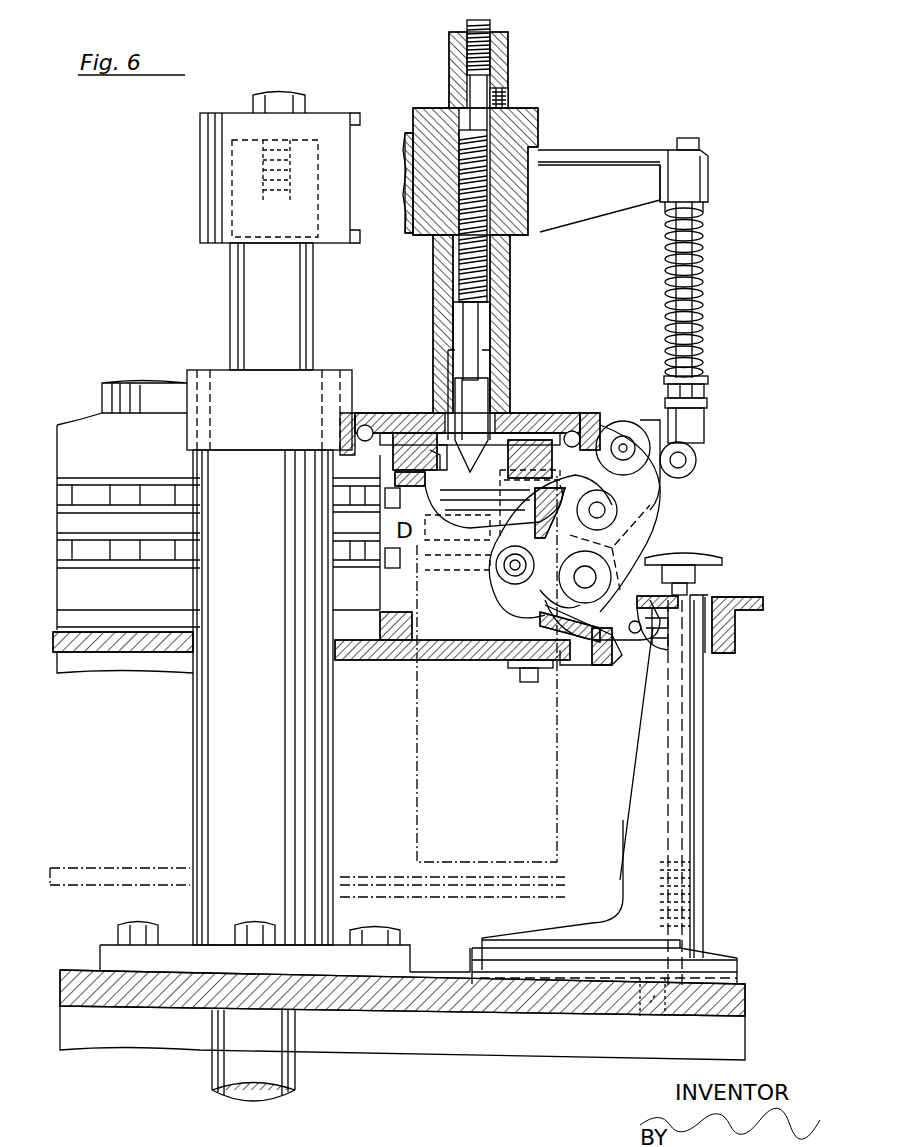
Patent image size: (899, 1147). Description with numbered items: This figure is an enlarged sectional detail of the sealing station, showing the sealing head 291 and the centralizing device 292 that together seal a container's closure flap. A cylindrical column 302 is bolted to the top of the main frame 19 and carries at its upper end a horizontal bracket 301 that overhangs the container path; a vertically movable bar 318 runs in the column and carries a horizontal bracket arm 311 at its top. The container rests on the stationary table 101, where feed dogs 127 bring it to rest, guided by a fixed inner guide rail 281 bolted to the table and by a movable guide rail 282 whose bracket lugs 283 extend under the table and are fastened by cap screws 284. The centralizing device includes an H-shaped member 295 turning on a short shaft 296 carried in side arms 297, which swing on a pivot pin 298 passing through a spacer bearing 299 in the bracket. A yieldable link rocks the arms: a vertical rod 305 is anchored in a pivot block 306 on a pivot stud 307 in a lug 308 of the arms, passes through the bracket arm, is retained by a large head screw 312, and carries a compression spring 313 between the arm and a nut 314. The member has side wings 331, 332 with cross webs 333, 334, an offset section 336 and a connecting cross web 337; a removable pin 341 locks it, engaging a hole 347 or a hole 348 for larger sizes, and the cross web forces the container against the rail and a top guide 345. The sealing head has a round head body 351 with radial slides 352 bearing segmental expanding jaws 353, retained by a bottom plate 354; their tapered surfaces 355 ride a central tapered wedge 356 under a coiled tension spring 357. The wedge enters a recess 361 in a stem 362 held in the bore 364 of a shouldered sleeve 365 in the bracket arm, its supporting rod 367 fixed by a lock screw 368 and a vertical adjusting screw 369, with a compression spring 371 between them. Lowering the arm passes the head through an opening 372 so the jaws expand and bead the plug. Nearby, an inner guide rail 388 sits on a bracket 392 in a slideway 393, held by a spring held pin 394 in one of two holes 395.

The frame 19 is at (450, 1008).
The stationary table 101 is at (400, 680).
The feed dogs 127 is at (413, 530).
The fixed inner guide rail 281 is at (390, 656).
The movable guide rail 282 is at (596, 666).
The bracket lugs 283 is at (520, 670).
The cap screws 284 is at (528, 684).
The sealing head 291 is at (538, 100).
The centralizing device 292 is at (665, 536).
The H-shaped member 295 is at (508, 592).
The short shaft 296 is at (580, 580).
The side arms 297 is at (645, 532).
The pivot pin 298 is at (623, 436).
The spacer bearing 299 is at (608, 428).
The horizontal bracket 301 is at (305, 395).
The cylindrical column 302 is at (263, 697).
The vertical rod 305 is at (703, 238).
The pivot block 306 is at (695, 408).
The pivot stud 307 is at (682, 460).
The lug 308 is at (668, 492).
The horizontal bracket arm 311 is at (600, 158).
The large head screw 312 is at (690, 138).
The compression spring 313 is at (704, 218).
The nut 314 is at (702, 382).
The vertically movable bar 318 is at (258, 283).
The side wing 331 is at (560, 503).
The side wing 332 is at (505, 585).
The cross web 333 is at (535, 515).
The cross web 334 is at (602, 500).
The offset section 336 is at (640, 642).
The cross web 337 is at (680, 600).
The removable pin 341 is at (605, 508).
The top guide 345 is at (400, 478).
The hole 347 is at (628, 627).
The hole 348 is at (510, 568).
The round head body 351 is at (515, 415).
The radial slides 352 is at (540, 430).
The segmental expanding jaws 353 is at (436, 460).
The bottom plate 354 is at (425, 448).
The tapered surfaces 355 is at (425, 445).
The central tapered wedge 356 is at (478, 390).
The coiled tension spring 357 is at (578, 412).
The recess 361 is at (492, 360).
The stem 362 is at (498, 335).
The bore 364 is at (432, 296).
The shouldered sleeve 365 is at (445, 262).
The supporting rod 367 is at (480, 330).
The lock screw 368 is at (500, 90).
The vertical adjusting screw 369 is at (492, 24).
The compression spring 371 is at (445, 108).
The opening 372 is at (597, 422).
The inner guide rail 388 is at (766, 603).
The bracket 392 is at (697, 745).
The slideway 393 is at (712, 952).
The spring held pin 394 is at (722, 560).
The holes 395 is at (652, 1010).